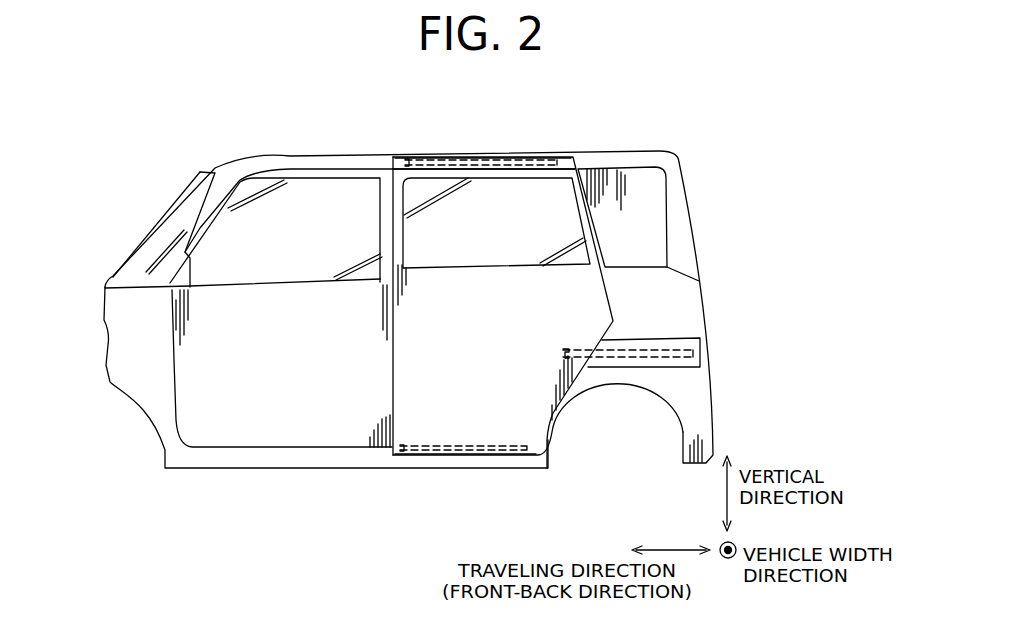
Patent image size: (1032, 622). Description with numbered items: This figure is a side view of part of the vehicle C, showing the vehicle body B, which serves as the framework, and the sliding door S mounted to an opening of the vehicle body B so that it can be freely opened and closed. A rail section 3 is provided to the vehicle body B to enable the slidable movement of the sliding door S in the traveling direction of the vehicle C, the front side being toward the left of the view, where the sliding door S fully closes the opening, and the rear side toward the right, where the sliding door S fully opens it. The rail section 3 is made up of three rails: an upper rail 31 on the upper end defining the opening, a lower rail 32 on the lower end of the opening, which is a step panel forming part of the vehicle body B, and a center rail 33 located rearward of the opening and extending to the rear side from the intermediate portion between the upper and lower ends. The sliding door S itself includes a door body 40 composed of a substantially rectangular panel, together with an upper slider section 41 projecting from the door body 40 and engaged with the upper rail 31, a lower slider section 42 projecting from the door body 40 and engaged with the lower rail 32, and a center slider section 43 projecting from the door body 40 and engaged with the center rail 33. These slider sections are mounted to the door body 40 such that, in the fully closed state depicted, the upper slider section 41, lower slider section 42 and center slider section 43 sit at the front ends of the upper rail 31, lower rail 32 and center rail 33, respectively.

The rail section 3 is at (749, 212).
The upper rail 31 is at (495, 153).
The lower rail 32 is at (488, 456).
The center rail 33 is at (657, 342).
The door body 40 is at (574, 158).
The upper slider section 41 is at (413, 153).
The lower slider section 42 is at (412, 456).
The center slider section 43 is at (566, 356).
The vehicle body B is at (621, 160).
The vehicle C is at (667, 141).
The sliding door S is at (471, 353).